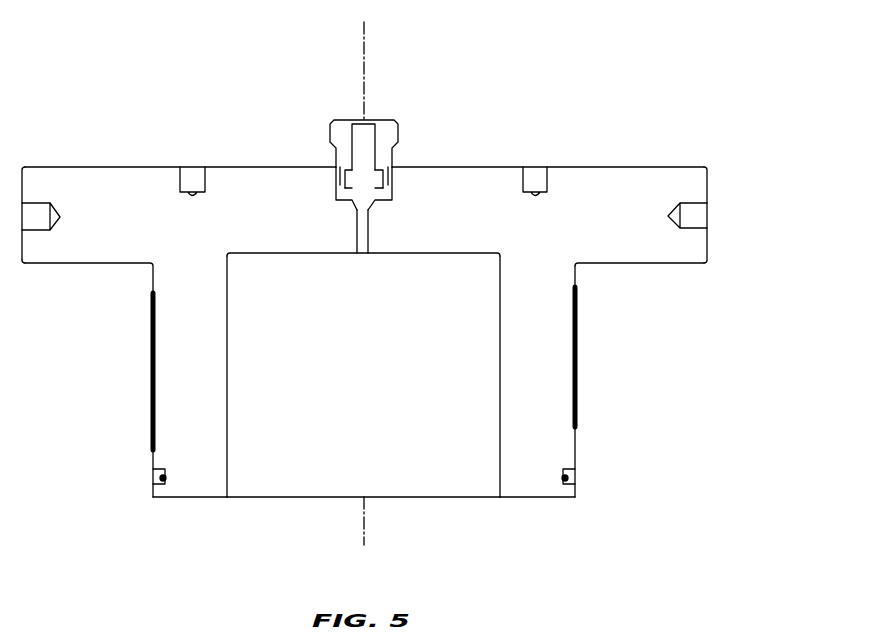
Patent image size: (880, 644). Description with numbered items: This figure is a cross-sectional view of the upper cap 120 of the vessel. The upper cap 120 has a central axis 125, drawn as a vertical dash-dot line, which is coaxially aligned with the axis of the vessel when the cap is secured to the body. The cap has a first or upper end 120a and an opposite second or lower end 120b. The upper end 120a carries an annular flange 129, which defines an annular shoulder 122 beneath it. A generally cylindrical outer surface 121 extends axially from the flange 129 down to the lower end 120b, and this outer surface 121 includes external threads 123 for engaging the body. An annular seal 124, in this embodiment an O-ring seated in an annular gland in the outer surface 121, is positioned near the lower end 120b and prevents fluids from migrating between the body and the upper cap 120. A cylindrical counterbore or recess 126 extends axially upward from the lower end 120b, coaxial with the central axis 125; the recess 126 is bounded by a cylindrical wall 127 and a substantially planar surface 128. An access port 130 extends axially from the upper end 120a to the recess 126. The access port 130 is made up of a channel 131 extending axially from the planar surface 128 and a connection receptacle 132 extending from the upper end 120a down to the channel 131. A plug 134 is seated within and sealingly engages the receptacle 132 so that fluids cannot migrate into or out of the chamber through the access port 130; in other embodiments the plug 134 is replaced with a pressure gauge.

The upper cap 120 is at (648, 41).
The upper end 120a is at (699, 167).
The lower end 120b is at (540, 498).
The outer surface 121 is at (577, 325).
The annular shoulder 122 is at (627, 265).
The external threads 123 is at (144, 350).
The annular seal 124 is at (584, 472).
The central axis 125 is at (363, 23).
The recess 126 is at (274, 478).
The cylindrical wall 127 is at (228, 347).
The planar surface 128 is at (272, 254).
The annular flange 129 is at (722, 196).
The access port 130 is at (323, 184).
The channel 131 is at (370, 242).
The connection receptacle 132 is at (395, 192).
The plug 134 is at (400, 124).